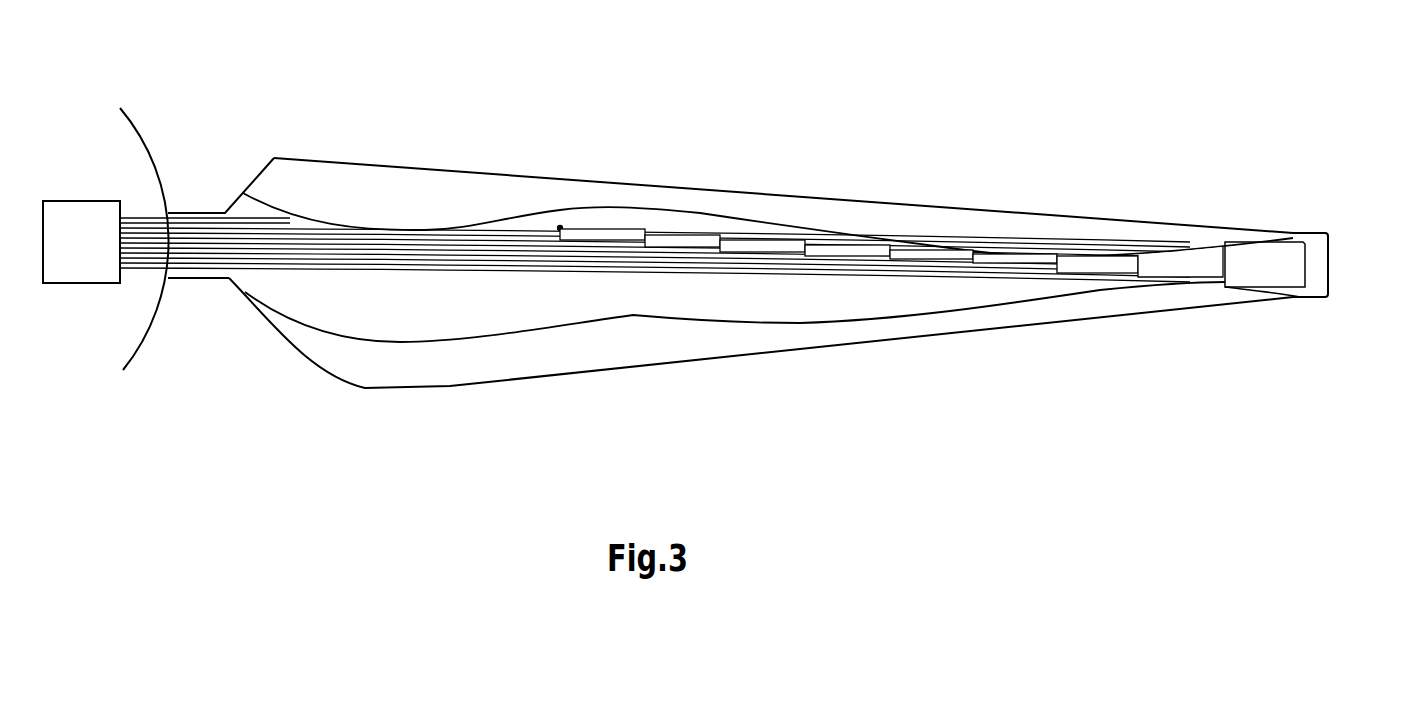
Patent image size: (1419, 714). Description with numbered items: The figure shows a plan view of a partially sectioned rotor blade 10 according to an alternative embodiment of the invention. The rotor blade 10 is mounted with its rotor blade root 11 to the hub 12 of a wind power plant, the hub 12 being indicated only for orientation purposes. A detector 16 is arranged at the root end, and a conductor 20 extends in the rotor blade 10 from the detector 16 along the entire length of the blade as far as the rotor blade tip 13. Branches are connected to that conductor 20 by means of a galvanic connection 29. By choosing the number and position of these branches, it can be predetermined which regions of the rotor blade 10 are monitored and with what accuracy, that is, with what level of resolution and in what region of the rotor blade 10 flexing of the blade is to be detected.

The rotor blade 10 is at (968, 190).
The rotor blade root 11 is at (193, 213).
The hub 12 is at (136, 128).
The rotor blade tip 13 is at (1330, 275).
The detector 16 is at (93, 256).
The conductor 20 is at (597, 219).
The galvanic connection 29 is at (803, 225).